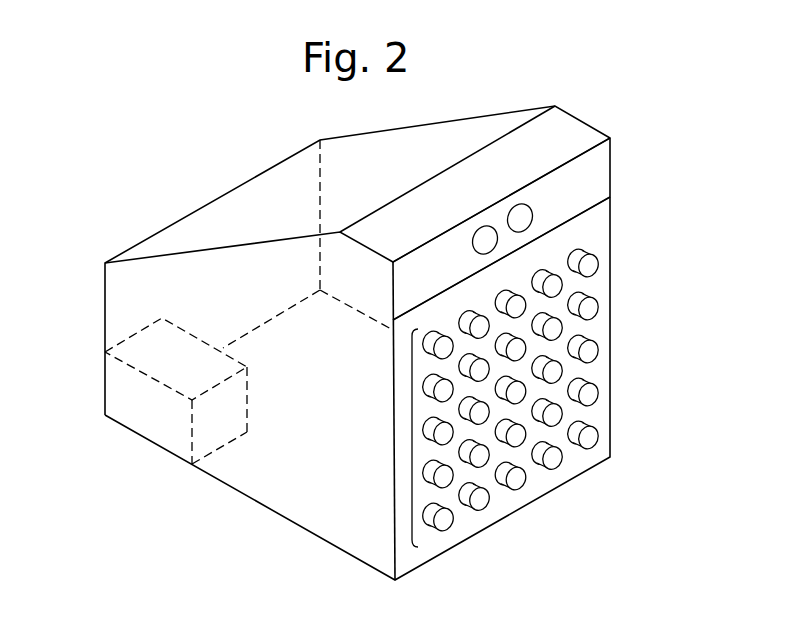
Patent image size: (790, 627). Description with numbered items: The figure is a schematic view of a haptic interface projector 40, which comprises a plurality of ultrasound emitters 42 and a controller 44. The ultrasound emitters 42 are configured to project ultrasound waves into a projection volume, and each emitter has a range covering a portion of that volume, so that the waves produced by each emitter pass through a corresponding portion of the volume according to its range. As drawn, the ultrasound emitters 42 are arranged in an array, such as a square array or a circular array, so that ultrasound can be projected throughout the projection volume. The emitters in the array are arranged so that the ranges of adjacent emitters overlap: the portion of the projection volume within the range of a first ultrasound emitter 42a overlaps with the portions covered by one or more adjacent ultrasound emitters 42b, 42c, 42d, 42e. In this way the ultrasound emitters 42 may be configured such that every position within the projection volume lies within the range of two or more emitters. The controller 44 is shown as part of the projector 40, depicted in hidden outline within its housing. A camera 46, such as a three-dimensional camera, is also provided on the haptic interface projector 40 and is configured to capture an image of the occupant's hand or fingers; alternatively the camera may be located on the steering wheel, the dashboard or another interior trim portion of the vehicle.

The haptic interface projector 40 is at (130, 218).
The ultrasound emitters 42 is at (412, 443).
The first ultrasound emitter 42a is at (524, 397).
The adjacent ultrasound emitter 42b is at (524, 352).
The adjacent ultrasound emitter 42c is at (560, 375).
The adjacent ultrasound emitter 42d is at (522, 446).
The adjacent ultrasound emitter 42e is at (480, 425).
The controller 44 is at (163, 412).
The camera 46 is at (532, 213).